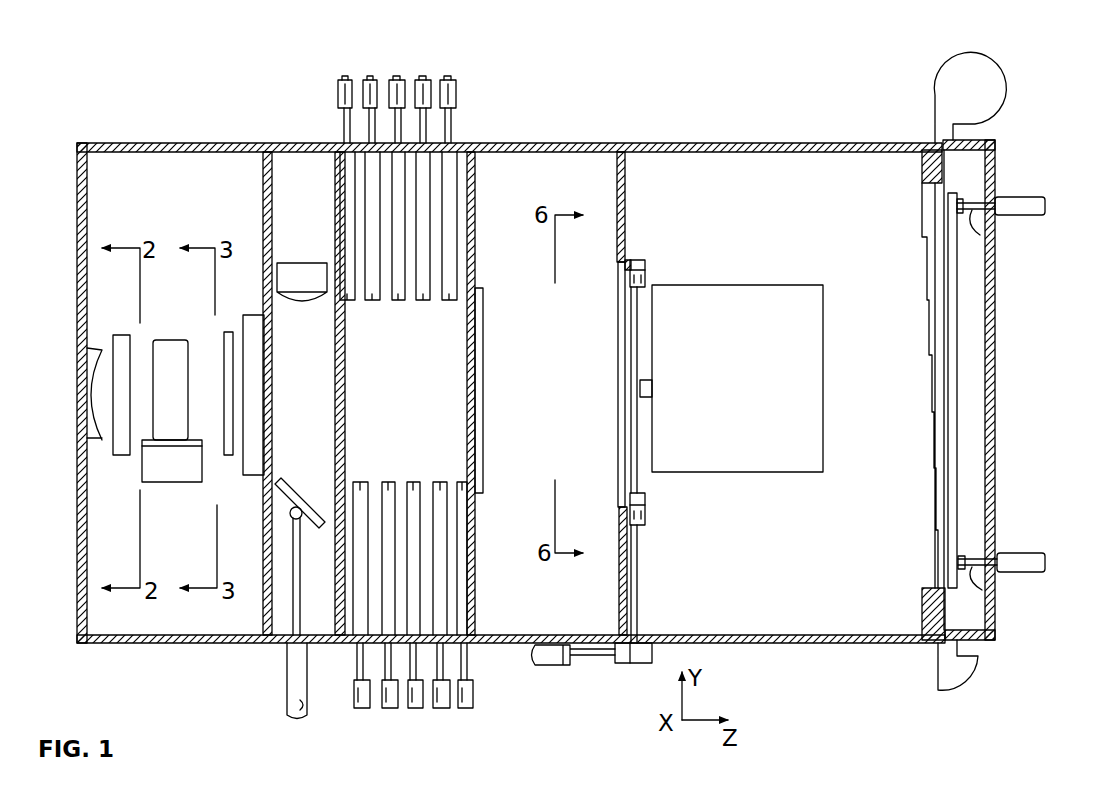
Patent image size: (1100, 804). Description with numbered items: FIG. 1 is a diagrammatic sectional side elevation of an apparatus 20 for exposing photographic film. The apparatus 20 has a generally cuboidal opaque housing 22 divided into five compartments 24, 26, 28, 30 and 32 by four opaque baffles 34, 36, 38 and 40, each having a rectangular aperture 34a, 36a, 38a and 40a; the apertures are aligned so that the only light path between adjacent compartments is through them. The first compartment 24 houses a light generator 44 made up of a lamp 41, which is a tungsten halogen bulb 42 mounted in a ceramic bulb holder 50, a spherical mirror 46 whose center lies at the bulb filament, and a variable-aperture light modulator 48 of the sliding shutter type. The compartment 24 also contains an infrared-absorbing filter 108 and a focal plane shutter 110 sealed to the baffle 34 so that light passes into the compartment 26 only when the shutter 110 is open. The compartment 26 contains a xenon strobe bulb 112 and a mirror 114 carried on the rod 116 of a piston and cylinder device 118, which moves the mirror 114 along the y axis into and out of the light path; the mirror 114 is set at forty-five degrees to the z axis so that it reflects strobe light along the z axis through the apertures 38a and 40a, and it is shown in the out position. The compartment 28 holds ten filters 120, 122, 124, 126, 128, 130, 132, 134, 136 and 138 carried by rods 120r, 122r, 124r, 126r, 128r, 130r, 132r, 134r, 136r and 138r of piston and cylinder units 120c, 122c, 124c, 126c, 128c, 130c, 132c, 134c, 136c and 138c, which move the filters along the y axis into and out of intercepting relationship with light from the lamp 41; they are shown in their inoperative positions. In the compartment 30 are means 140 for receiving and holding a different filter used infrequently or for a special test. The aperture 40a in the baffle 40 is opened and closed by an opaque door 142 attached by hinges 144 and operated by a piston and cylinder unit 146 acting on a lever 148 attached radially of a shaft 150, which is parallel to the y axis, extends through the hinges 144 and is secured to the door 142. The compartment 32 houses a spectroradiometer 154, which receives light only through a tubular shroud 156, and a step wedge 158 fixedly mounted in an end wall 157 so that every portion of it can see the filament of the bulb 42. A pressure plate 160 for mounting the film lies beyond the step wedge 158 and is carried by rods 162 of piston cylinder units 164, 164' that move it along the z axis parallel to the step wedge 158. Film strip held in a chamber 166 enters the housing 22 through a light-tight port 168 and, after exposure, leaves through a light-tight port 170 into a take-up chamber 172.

The apparatus 20 is at (802, 652).
The housing 22 is at (722, 143).
The compartment 24 is at (180, 223).
The compartment 26 is at (314, 209).
The compartment 28 is at (418, 398).
The compartment 30 is at (524, 253).
The compartment 32 is at (778, 223).
The baffle 34 is at (268, 200).
The aperture 34a is at (268, 392).
The baffle 36 is at (338, 200).
The aperture 36a is at (337, 380).
The baffle 38 is at (476, 200).
The aperture 38a is at (484, 372).
The baffle 40 is at (626, 192).
The aperture 40a is at (620, 375).
The lamp 41 is at (198, 415).
The tungsten halogen bulb 42 is at (172, 345).
The light generator 44 is at (170, 545).
The mirror 46 is at (100, 440).
The light modulator 48 is at (121, 340).
The bulb holder 50 is at (165, 462).
The filter 108 is at (229, 456).
The shutter 110 is at (252, 320).
The xenon strobe bulb 112 is at (300, 272).
The mirror 114 is at (300, 508).
The rod 116 is at (302, 605).
The piston and cylinder device 118 is at (292, 672).
The filter 120 is at (350, 302).
The piston and cylinder unit 120c is at (340, 100).
The rod 120r is at (346, 125).
The filter 122 is at (360, 480).
The piston and cylinder unit 122c is at (362, 694).
The rod 122r is at (360, 678).
The filter 124 is at (372, 302).
The piston and cylinder unit 124c is at (370, 92).
The rod 124r is at (372, 125).
The filter 126 is at (388, 484).
The piston and cylinder unit 126c is at (390, 694).
The rod 126r is at (388, 661).
The filter 128 is at (398, 302).
The piston and cylinder unit 128c is at (398, 78).
The rod 128r is at (398, 125).
The filter 130 is at (413, 480).
The piston and cylinder unit 130c is at (415, 710).
The rod 130r is at (413, 661).
The filter 132 is at (424, 302).
The piston and cylinder unit 132c is at (423, 92).
The rod 132r is at (423, 125).
The filter 134 is at (440, 484).
The piston and cylinder unit 134c is at (441, 694).
The rod 134r is at (440, 661).
The filter 136 is at (449, 302).
The piston and cylinder unit 136c is at (458, 88).
The rod 136r is at (452, 126).
The filter 138 is at (465, 477).
The piston and cylinder unit 138c is at (465, 715).
The rod 138r is at (468, 660).
The filter holding means 140 is at (484, 345).
The door 142 is at (625, 310).
The hinges 144 is at (646, 272).
The piston and cylinder unit 146 is at (572, 668).
The lever 148 is at (653, 655).
The shaft 150 is at (640, 575).
The spectroradiometer 154 is at (762, 367).
The tubular shroud 156 is at (655, 395).
The end wall 157 is at (925, 605).
The step wedge 158 is at (930, 228).
The pressure plate 160 is at (955, 378).
The rods 162 is at (983, 240).
The piston cylinder units 164 is at (1028, 180).
The latch knob 164' is at (1024, 536).
The chamber 166 is at (955, 88).
The light-tight port 168 is at (935, 160).
The light-tight port 170 is at (950, 635).
The take-up chamber 172 is at (1000, 692).